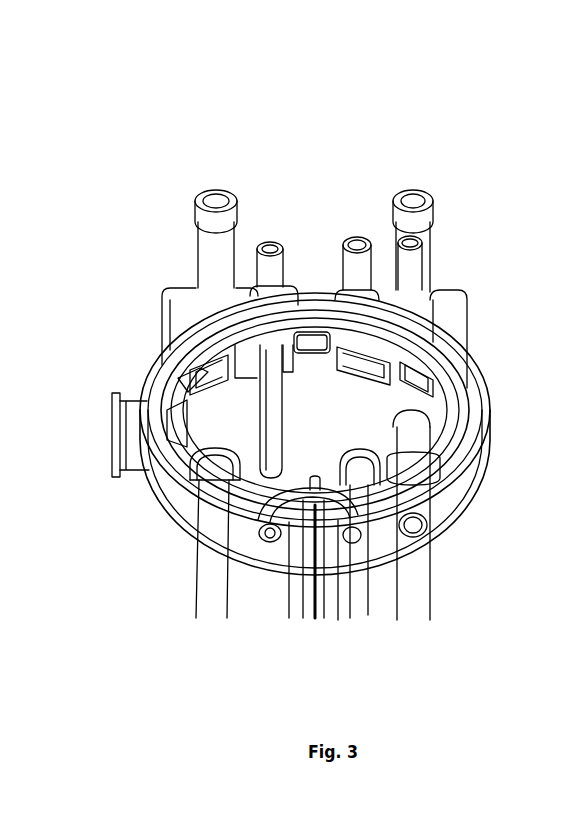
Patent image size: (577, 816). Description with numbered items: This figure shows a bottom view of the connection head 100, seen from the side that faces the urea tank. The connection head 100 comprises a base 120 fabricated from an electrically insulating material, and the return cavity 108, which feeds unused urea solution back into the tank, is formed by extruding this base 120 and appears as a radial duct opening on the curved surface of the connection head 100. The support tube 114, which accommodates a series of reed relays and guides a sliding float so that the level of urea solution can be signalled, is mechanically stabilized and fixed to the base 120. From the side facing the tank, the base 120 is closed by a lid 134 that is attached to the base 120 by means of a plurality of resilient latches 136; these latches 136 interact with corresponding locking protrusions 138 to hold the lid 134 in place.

The connection head 100 is at (483, 173).
The return cavity 108 is at (262, 388).
The support tube 114 is at (296, 612).
The base 120 is at (353, 355).
The lid 134 is at (357, 430).
The resilient latches 136 is at (307, 346).
The locking protrusions 138 is at (210, 372).